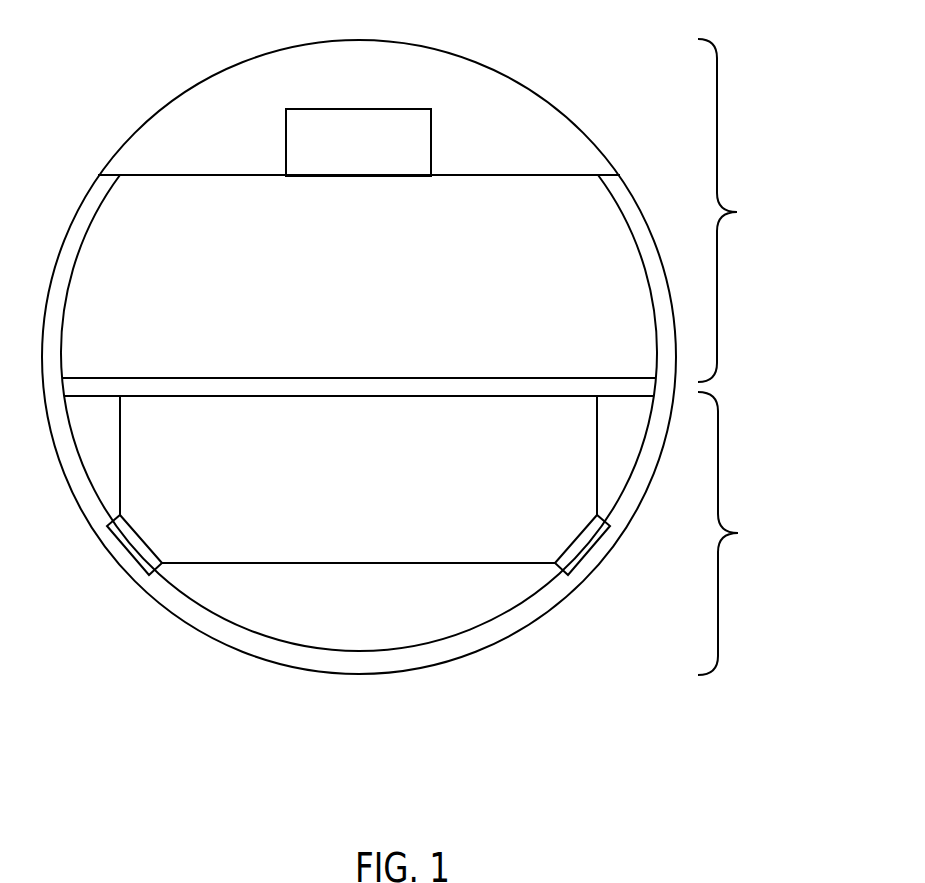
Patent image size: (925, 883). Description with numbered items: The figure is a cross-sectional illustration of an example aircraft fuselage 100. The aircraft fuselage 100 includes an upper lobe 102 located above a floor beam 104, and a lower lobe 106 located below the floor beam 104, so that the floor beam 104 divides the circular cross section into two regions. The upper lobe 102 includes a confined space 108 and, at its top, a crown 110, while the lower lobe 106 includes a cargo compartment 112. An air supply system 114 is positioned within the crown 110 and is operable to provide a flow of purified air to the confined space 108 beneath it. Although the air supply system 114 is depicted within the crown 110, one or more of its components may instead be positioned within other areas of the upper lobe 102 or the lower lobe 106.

The aircraft fuselage 100 is at (353, 341).
The upper lobe 102 is at (740, 211).
The floor beam 104 is at (335, 378).
The lower lobe 106 is at (741, 532).
The confined space 108 is at (127, 228).
The crown 110 is at (140, 46).
The cargo compartment 112 is at (318, 539).
The air supply system 114 is at (431, 150).